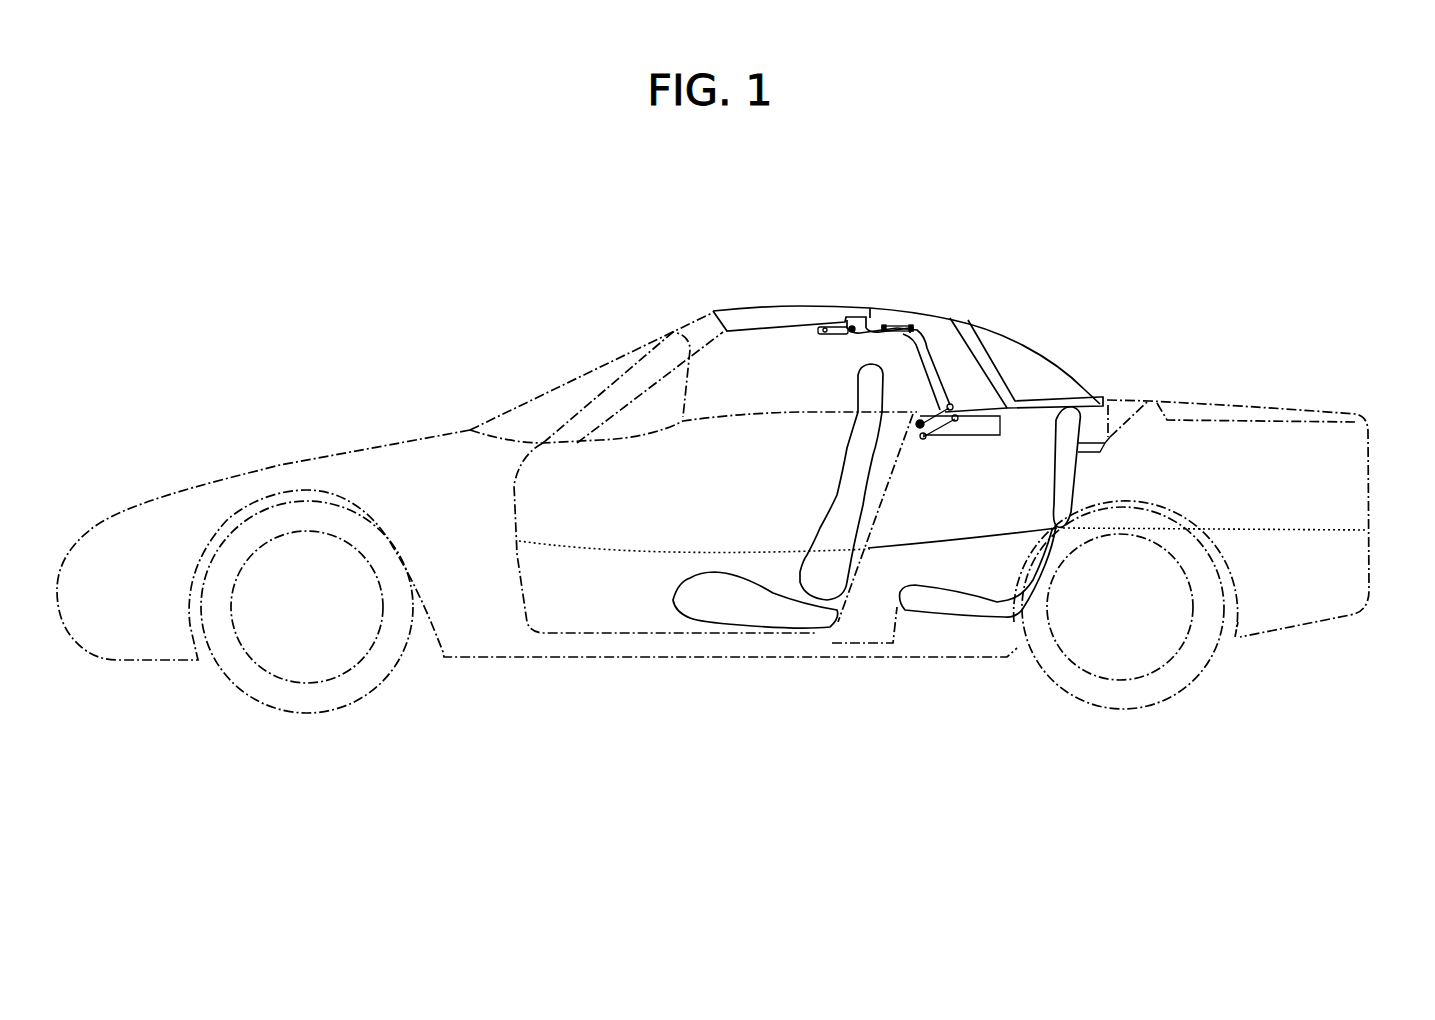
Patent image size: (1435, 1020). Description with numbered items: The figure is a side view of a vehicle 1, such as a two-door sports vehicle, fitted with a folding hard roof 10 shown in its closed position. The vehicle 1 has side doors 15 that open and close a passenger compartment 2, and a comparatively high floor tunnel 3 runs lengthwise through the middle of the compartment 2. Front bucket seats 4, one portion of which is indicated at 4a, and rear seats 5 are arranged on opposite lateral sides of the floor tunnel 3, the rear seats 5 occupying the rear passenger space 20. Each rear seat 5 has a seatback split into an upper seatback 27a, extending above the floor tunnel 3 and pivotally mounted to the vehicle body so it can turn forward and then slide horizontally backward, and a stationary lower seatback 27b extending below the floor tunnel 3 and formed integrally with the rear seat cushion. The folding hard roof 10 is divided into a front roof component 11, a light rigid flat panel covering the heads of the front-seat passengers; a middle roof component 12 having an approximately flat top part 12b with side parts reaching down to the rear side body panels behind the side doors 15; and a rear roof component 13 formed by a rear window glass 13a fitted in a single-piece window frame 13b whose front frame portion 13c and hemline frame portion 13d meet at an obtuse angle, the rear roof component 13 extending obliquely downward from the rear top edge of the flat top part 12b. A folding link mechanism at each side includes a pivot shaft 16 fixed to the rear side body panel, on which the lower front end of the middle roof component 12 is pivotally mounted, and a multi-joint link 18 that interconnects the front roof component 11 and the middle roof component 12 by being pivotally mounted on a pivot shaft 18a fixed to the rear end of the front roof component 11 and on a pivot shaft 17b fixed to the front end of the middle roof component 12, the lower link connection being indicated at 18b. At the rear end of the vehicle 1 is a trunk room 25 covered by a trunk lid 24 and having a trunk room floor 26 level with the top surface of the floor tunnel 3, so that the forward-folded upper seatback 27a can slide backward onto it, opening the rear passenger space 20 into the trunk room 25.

The vehicle 1 is at (532, 383).
The passenger compartment 2 is at (762, 386).
The floor tunnel 3 is at (639, 551).
The front bucket seat 4 is at (778, 496).
The seat back 4a is at (837, 466).
The rear seat 5 is at (965, 620).
The folding hard roof 10 is at (908, 312).
The front roof component 11 is at (800, 303).
The middle roof component 12 is at (922, 310).
The flat top part 12b is at (855, 304).
The rear roof component 13 is at (1024, 330).
The rear window glass 13a is at (1017, 348).
The window frame 13b is at (1055, 398).
The front frame portion 13c is at (1000, 388).
The hemline frame portion 13d is at (1090, 398).
The side door 15 is at (693, 390).
The pivot shaft 16 is at (920, 440).
The pivot shaft 17b is at (933, 302).
The multi-joint link 18 is at (889, 404).
The pivot shaft 18a is at (848, 338).
The link lower end 18b is at (937, 440).
The rear passenger space 20 is at (941, 522).
The trunk lid 24 is at (1257, 403).
The trunk room 25 is at (1255, 495).
The trunk room floor 26 is at (1322, 530).
The upper seatback 27a is at (1060, 442).
The stationary lower seatback 27b is at (1033, 568).